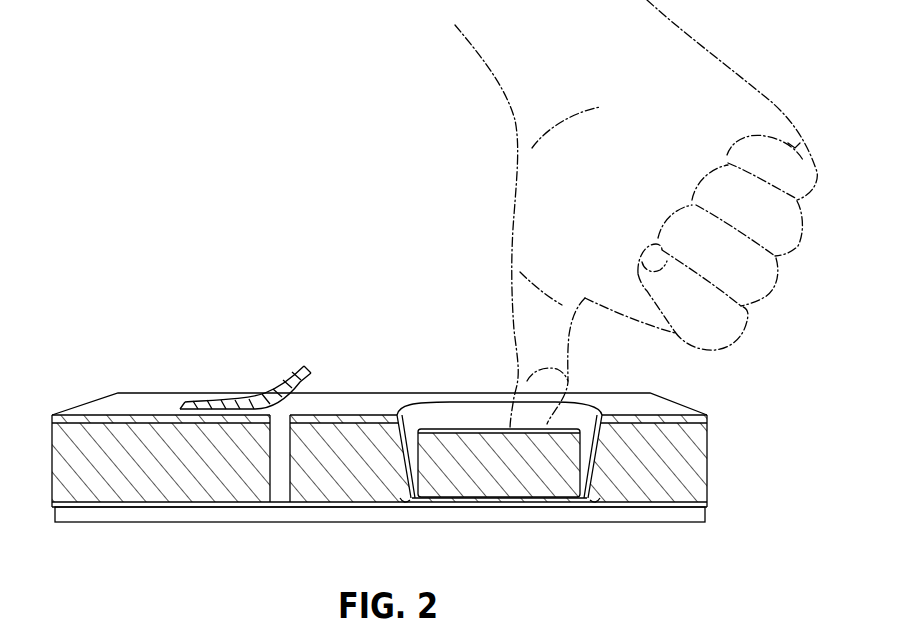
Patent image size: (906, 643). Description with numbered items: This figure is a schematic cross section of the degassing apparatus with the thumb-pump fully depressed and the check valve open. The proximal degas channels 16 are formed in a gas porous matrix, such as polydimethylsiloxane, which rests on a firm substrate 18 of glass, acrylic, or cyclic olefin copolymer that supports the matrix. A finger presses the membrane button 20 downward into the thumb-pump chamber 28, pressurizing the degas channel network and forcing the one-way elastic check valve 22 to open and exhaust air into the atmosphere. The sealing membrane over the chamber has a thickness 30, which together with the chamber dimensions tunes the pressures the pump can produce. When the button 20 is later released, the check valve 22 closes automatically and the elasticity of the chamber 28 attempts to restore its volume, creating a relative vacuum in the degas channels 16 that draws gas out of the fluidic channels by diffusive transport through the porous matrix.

The proximal degas channels 16 is at (112, 505).
The substrate 18 is at (672, 522).
The membrane button 20 is at (548, 472).
The elastic check valve 22 is at (262, 396).
The thumb-pump chamber 28 is at (402, 485).
The thickness 30 is at (282, 488).